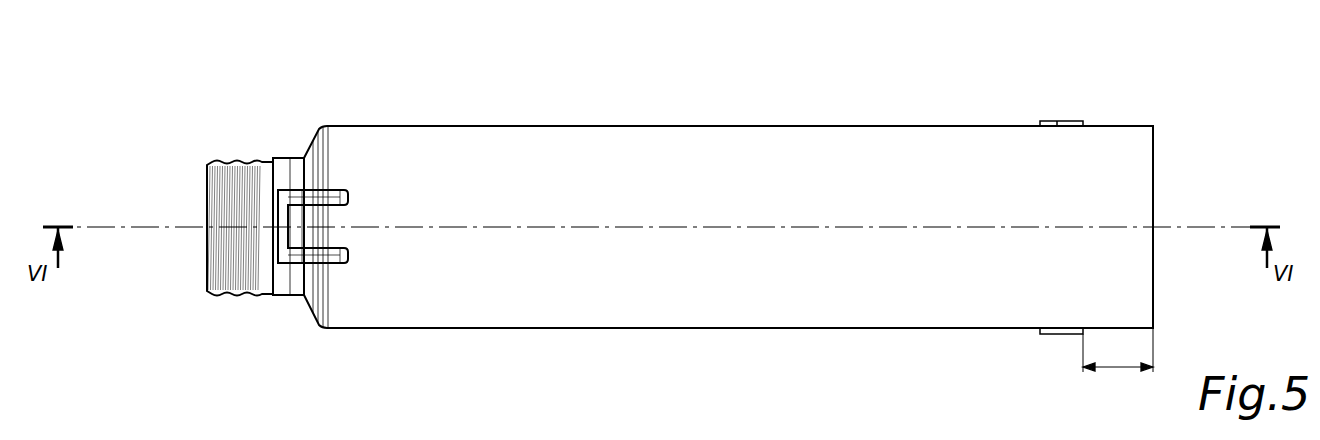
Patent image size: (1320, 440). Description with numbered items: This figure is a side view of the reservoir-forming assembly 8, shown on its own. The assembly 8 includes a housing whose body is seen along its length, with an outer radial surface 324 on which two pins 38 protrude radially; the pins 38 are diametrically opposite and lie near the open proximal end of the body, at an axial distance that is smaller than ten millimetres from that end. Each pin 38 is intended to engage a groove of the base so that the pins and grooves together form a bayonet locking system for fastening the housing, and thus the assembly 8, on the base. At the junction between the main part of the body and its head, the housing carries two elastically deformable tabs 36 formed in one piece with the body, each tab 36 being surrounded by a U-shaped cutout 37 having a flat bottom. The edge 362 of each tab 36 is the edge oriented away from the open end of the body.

The reservoir-forming assembly 8 is at (650, 345).
The outer radial surface 324 is at (792, 182).
The elastically deformable tab 36 is at (312, 236).
The edge of tab 362 is at (277, 213).
The U-shaped cutout 37 is at (301, 192).
The pin 38 is at (1067, 120).